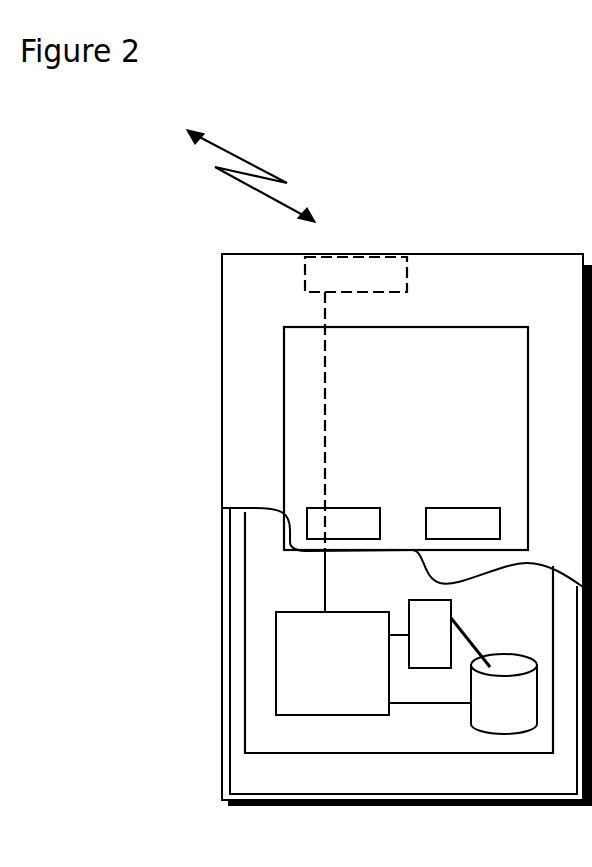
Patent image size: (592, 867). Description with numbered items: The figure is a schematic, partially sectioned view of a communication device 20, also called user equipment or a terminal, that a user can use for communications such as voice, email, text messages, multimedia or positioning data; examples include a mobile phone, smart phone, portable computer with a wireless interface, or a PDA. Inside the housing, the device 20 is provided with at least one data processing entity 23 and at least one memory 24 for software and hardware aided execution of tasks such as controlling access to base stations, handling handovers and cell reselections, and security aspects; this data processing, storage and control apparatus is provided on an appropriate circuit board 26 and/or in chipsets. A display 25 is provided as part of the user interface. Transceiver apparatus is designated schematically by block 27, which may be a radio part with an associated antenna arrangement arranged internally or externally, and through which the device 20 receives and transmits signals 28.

The communication device 20 is at (222, 316).
The data processing entity 23 is at (285, 635).
The memory 24 is at (497, 703).
The display 25 is at (305, 385).
The circuit board 26 is at (275, 733).
The transceiver apparatus 27 is at (338, 274).
The signals 28 is at (217, 146).